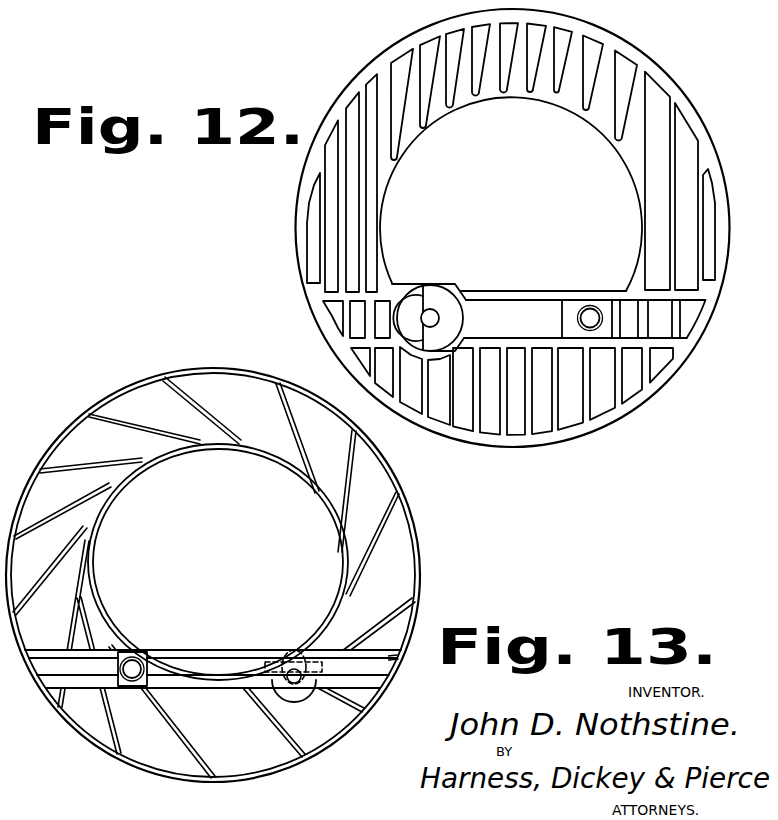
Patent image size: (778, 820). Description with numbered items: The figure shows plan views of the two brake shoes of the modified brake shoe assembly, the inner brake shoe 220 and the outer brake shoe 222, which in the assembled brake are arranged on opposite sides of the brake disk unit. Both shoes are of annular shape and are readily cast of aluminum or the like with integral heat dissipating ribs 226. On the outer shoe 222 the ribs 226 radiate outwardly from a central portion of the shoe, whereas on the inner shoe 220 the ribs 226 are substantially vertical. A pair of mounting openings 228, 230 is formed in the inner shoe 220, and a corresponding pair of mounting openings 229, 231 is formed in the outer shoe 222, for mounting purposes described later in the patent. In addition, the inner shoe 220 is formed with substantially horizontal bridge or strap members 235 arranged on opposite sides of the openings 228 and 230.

In FIG. 12, the inner brake shoe 220 is at (491, 418).
In FIG. 13, the outer brake shoe 222 is at (366, 697).
In FIG. 12, the heat dissipating ribs 226 is at (538, 415).
In FIG. 13, the heat dissipating ribs 226 is at (397, 518).
In FIG. 12, the mounting opening 228 is at (591, 306).
In FIG. 13, the mounting opening 229 is at (134, 658).
In FIG. 12, the mounting opening 230 is at (432, 308).
In FIG. 13, the mounting opening 231 is at (286, 650).
In FIG. 12, the bridge or strap members 235 is at (502, 340).